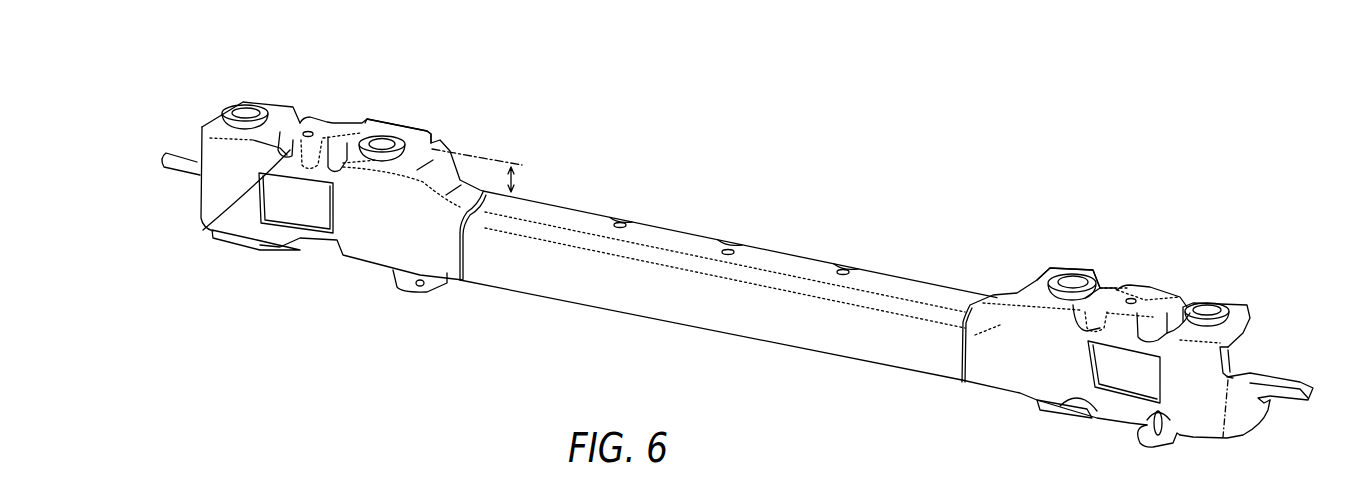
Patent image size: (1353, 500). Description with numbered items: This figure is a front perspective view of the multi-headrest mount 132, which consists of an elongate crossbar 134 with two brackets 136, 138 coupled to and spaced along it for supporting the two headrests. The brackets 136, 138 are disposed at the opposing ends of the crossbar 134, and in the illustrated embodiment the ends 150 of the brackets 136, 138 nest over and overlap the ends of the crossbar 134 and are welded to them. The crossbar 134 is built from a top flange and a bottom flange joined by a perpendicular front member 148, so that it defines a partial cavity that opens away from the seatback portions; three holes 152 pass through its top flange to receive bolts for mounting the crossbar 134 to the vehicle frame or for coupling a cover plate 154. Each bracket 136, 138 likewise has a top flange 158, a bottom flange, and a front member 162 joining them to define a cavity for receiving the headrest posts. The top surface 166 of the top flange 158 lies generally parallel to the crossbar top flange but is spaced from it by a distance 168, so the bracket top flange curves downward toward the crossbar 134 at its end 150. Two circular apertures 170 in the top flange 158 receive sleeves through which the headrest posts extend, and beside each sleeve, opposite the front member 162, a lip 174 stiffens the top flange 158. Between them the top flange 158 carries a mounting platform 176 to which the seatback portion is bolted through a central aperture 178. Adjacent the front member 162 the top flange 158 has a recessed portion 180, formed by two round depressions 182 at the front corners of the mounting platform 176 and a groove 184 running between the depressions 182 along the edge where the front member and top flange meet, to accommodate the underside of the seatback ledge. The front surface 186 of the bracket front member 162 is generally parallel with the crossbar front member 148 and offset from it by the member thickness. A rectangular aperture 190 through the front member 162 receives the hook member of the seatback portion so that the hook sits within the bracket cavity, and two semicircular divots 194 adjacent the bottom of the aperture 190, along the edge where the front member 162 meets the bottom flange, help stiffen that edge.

The multi-headrest mount 132 is at (1018, 128).
The crossbar 134 is at (677, 238).
The bracket 136 is at (220, 122).
The bracket 138 is at (1253, 312).
The front member 148 is at (673, 300).
The ends of the brackets 150 is at (478, 183).
The holes 152 is at (622, 220).
The cover plate 154 is at (908, 288).
The top flange 158 is at (309, 130).
The front member 162 is at (387, 227).
The top surface 166 is at (420, 165).
The distance 168 is at (514, 180).
The circular apertures 170 is at (1298, 493).
The lip 174 is at (267, 105).
The mounting platform 176 is at (317, 127).
The aperture 178 is at (290, 157).
The recessed portion 180 is at (217, 135).
The depressions 182 is at (270, 155).
The groove 184 is at (212, 231).
The front surface 186 is at (987, 360).
The aperture 190 is at (293, 200).
The divots 194 is at (1085, 400).